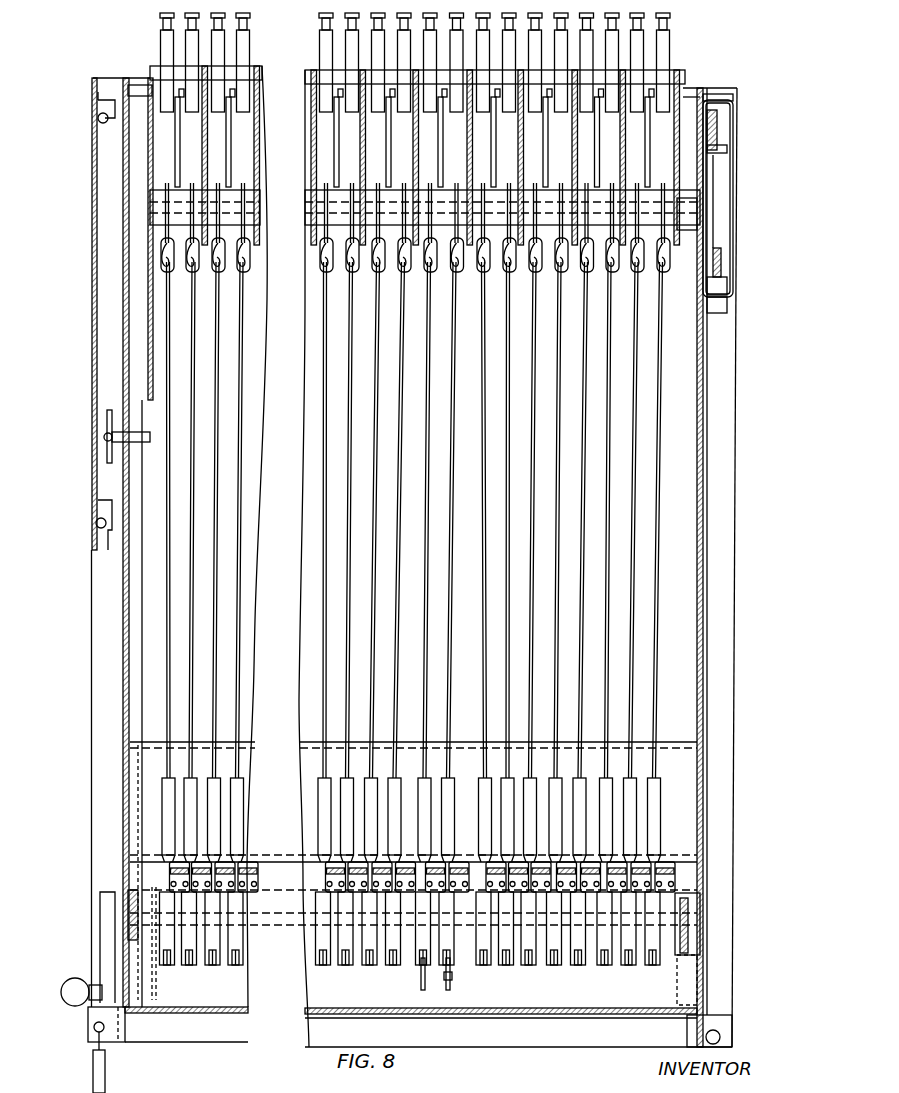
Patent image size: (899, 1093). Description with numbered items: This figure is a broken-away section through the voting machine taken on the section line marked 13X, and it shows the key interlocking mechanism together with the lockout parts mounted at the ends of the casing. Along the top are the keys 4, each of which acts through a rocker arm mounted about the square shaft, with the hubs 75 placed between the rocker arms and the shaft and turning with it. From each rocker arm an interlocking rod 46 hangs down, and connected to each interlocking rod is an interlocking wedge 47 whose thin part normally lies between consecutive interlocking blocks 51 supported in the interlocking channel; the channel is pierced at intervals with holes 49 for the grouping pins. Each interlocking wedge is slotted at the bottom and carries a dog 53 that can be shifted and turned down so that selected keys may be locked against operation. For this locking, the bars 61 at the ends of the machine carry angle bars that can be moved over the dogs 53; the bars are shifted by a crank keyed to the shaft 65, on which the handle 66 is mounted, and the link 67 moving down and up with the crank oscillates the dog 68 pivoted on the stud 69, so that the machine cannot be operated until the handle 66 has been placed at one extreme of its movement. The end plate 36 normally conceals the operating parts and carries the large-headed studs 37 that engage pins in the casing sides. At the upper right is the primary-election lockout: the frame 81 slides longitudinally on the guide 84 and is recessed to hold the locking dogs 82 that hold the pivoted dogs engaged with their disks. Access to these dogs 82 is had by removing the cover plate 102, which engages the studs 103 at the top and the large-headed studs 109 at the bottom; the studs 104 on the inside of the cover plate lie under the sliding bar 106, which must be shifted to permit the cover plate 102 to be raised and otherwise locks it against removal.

The key 4 is at (162, 42).
The section line 13X— 13X is at (620, 30).
The hub 75 is at (375, 192).
The interlocking rod 46 is at (415, 480).
The interlocking wedge 47 is at (445, 818).
The interlocking block 51 is at (468, 870).
The hole 49 is at (407, 884).
The dog 53 is at (450, 980).
The frame 81 is at (699, 92).
The stud 103 is at (724, 98).
The cover plate 102 is at (737, 105).
The guide 84 is at (716, 130).
The locking dog 82 is at (724, 146).
The bar 106 is at (719, 250).
The stud 104 is at (720, 287).
The stud 109 is at (725, 313).
The plate 36 is at (90, 376).
The stud 37 is at (98, 124).
The dog 68 is at (106, 418).
The stud 69 is at (106, 438).
The link 67 is at (140, 652).
The bar 61 is at (130, 895).
The shaft 65 is at (152, 920).
The handle 66 is at (66, 1002).